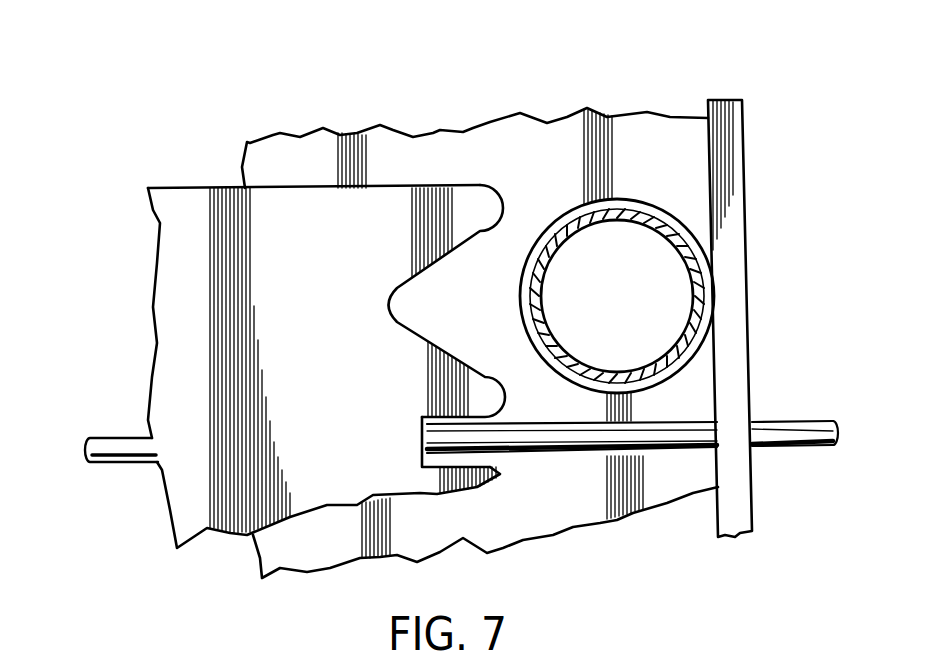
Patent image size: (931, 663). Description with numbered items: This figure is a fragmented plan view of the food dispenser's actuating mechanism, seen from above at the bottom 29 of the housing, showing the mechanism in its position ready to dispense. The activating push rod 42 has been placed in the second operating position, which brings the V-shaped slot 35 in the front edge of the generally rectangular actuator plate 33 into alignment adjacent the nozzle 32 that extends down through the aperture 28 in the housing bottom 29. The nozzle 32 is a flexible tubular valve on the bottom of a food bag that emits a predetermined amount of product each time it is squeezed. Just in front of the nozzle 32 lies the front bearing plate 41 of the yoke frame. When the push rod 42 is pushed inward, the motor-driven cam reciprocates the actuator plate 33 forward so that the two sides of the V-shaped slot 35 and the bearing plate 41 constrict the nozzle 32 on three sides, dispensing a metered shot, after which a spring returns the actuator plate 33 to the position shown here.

The aperture 28 is at (634, 195).
The bottom 29 is at (580, 500).
The nozzle 32 is at (710, 255).
The actuator plate 33 is at (170, 262).
The V-shaped slot 35 is at (517, 217).
The front bearing plate 41 is at (727, 318).
The activating push rod 42 is at (112, 445).